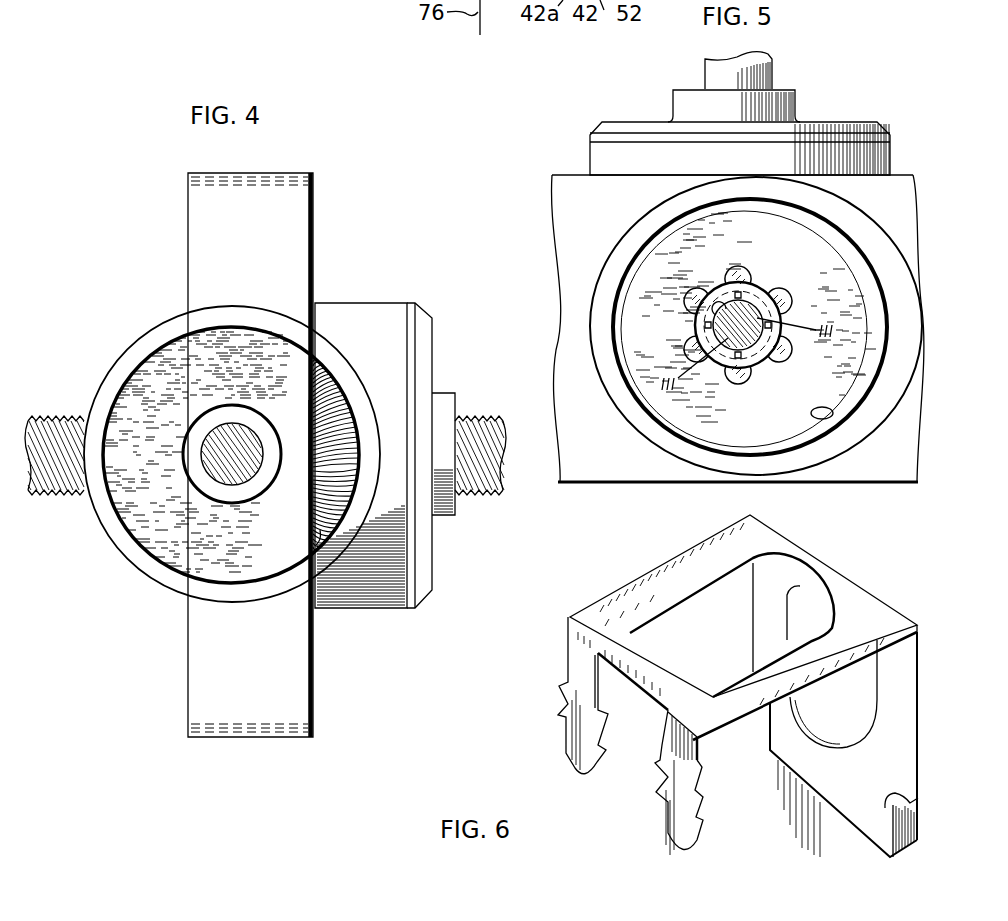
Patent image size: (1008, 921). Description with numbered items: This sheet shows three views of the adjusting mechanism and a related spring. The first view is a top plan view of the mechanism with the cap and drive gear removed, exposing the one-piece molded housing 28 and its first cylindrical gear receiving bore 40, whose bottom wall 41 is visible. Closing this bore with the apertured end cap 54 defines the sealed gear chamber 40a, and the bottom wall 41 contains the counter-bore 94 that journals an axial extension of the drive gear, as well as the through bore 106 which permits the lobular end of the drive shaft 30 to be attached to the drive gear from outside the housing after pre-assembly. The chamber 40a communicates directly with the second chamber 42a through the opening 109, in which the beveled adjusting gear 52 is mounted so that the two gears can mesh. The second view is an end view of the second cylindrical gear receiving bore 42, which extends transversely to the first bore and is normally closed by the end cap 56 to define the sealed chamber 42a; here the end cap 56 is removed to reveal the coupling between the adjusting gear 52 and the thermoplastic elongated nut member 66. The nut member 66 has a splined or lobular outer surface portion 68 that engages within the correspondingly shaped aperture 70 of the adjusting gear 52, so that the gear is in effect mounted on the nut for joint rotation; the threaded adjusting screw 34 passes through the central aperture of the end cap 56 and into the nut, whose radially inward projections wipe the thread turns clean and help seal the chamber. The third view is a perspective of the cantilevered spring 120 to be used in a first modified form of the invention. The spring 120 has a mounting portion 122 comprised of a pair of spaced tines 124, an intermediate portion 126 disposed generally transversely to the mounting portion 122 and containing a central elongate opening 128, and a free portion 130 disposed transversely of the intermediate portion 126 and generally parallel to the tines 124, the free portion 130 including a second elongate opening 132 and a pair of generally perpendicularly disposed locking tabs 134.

In FIG. 4, the housing 28 is at (292, 223).
In FIG. 5, the housing 28 is at (847, 158).
In FIG. 5, the drive shaft 30 is at (773, 75).
In FIG. 4, the adjusting screw 34 is at (480, 421).
In FIG. 5, the adjusting screw 34 is at (778, 343).
In FIG. 4, the first cylindrical gear receiving bore 40 is at (250, 333).
In FIG. 4, the sealed gear chamber 40a is at (170, 352).
In FIG. 4, the bottom wall 41 is at (153, 444).
In FIG. 5, the second cylindrical gear receiving bore 42 is at (812, 418).
In FIG. 4, the sealed gear chamber 42a is at (324, 488).
In FIG. 5, the sealed gear chamber 42a is at (664, 236).
In FIG. 4, the adjusting gear 52 is at (328, 393).
In FIG. 5, the end cap 54 is at (845, 122).
In FIG. 4, the end cap 56 is at (418, 323).
In FIG. 5, the nut member 66 is at (720, 293).
In FIG. 5, the splined or lobular outer surface portion 68 is at (785, 290).
In FIG. 5, the aperture 70 is at (720, 282).
In FIG. 4, the counter-bore 94 is at (192, 428).
In FIG. 4, the fourth bore 106 is at (240, 427).
In FIG. 4, the opening 109 is at (318, 540).
In FIG. 6, the cantilevered spring 120 is at (847, 560).
In FIG. 6, the mounting portion 122 is at (555, 652).
In FIG. 6, the tines 124 is at (583, 770).
In FIG. 6, the intermediate portion 126 is at (655, 587).
In FIG. 6, the central elongate opening 128 is at (663, 617).
In FIG. 6, the free portion 130 is at (890, 710).
In FIG. 6, the second elongate opening 132 is at (832, 728).
In FIG. 6, the locking tabs 134 is at (907, 838).